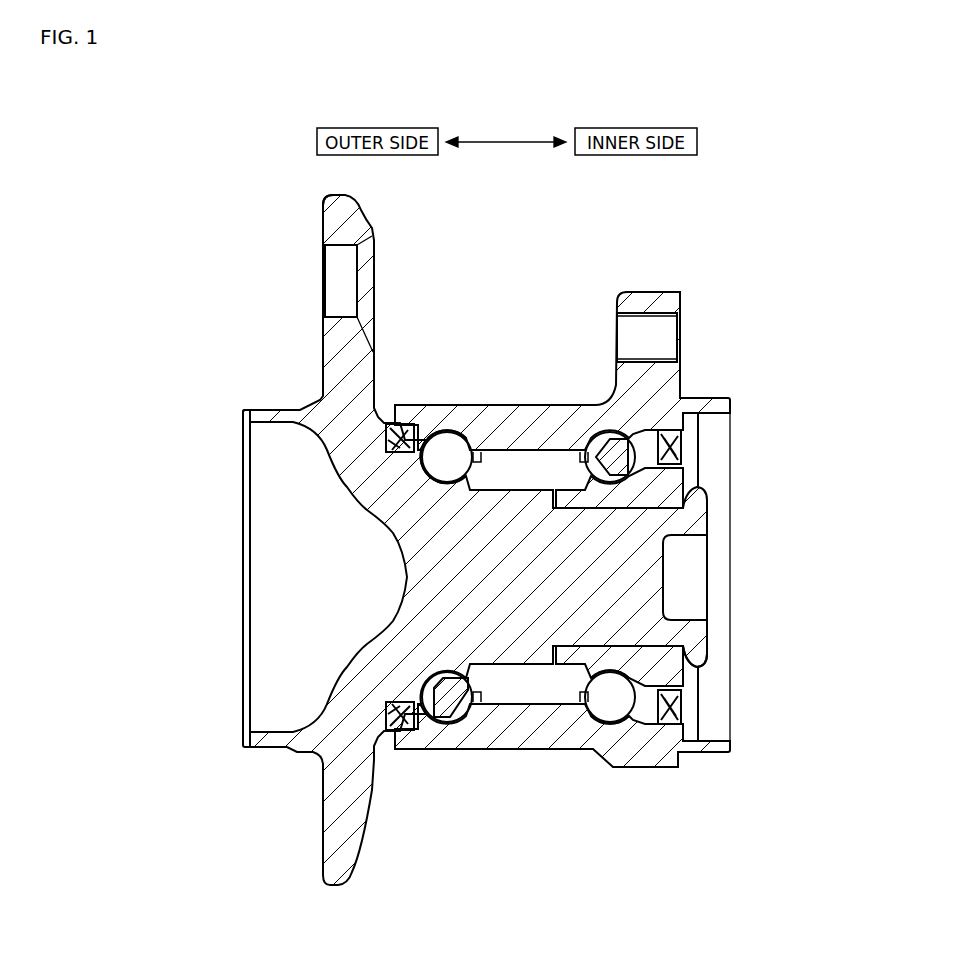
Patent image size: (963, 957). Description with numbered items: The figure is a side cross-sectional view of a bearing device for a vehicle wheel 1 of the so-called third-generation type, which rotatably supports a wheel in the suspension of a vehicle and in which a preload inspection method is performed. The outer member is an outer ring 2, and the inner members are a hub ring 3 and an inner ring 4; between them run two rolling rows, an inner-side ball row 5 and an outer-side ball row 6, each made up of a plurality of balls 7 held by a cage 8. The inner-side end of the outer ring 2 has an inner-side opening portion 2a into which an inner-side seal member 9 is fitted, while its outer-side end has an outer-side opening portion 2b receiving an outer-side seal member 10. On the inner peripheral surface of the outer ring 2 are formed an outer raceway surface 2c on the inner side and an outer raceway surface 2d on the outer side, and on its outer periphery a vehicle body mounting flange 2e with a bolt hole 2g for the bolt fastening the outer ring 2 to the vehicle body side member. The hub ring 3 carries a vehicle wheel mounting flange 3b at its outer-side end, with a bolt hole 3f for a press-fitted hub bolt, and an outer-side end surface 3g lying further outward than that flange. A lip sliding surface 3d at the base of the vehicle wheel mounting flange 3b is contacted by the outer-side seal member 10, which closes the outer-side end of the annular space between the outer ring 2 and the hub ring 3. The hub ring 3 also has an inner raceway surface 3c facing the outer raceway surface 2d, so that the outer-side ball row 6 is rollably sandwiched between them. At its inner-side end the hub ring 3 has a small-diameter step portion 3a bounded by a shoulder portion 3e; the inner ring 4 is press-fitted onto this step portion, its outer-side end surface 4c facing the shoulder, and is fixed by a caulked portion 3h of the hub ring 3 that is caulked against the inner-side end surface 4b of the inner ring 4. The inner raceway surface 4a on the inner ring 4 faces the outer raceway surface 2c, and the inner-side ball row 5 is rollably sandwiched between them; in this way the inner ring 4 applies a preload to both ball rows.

The bearing device for a vehicle wheel 1 is at (738, 368).
The outer ring 2 is at (520, 388).
The inner-side opening portion 2a is at (681, 653).
The outer-side opening portion 2b is at (413, 443).
The outer raceway surface on the inner side 2c is at (610, 722).
The outer raceway surface on the outer side 2d is at (461, 428).
The vehicle body mounting flange 2e is at (682, 297).
The bolt hole 2g is at (661, 362).
The hub ring 3 is at (294, 366).
The small-diameter step portion 3a is at (562, 690).
The vehicle wheel mounting flange 3b is at (323, 212).
The inner raceway surface 3c is at (470, 443).
The lip sliding surface 3d is at (393, 424).
The shoulder portion 3e is at (555, 503).
The bolt hole 3f is at (342, 247).
The outer-side end surface 3g is at (242, 410).
The caulked portion 3h is at (701, 641).
The inner ring 4 is at (678, 473).
The inner raceway surface 4a is at (593, 703).
The inner-side end surface 4b is at (683, 695).
The outer-side end surface 4c is at (553, 495).
The inner-side ball row 5 is at (605, 345).
The outer-side ball row 6 is at (472, 804).
The ball 7 is at (612, 443).
The cage 8 is at (600, 453).
The inner-side seal member 9 is at (682, 446).
The outer-side seal member 10 is at (395, 705).